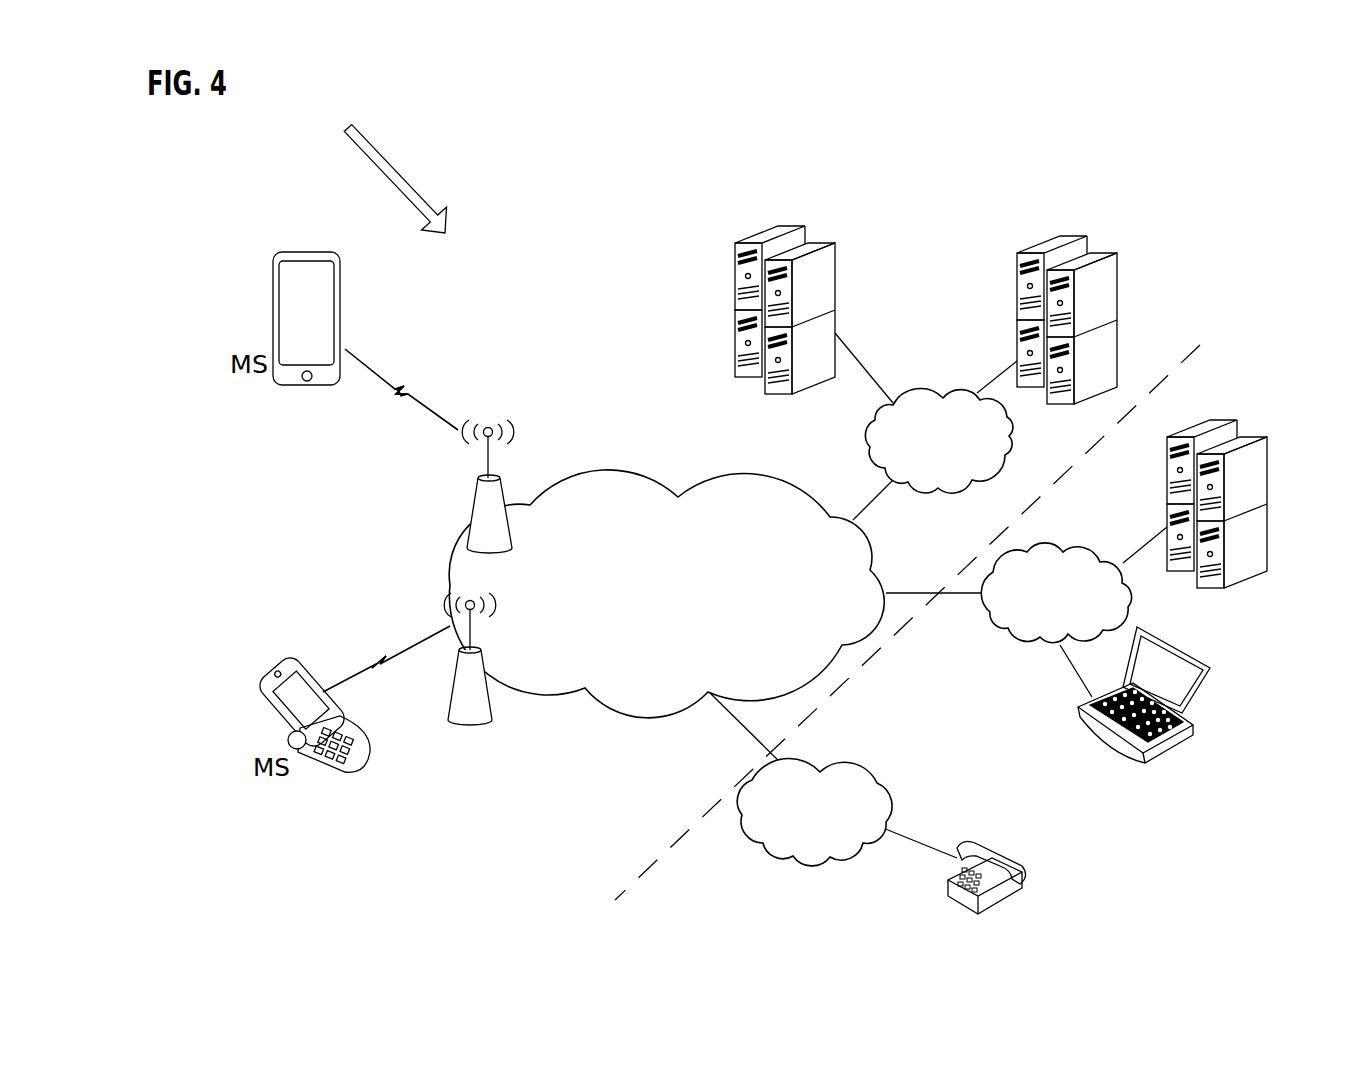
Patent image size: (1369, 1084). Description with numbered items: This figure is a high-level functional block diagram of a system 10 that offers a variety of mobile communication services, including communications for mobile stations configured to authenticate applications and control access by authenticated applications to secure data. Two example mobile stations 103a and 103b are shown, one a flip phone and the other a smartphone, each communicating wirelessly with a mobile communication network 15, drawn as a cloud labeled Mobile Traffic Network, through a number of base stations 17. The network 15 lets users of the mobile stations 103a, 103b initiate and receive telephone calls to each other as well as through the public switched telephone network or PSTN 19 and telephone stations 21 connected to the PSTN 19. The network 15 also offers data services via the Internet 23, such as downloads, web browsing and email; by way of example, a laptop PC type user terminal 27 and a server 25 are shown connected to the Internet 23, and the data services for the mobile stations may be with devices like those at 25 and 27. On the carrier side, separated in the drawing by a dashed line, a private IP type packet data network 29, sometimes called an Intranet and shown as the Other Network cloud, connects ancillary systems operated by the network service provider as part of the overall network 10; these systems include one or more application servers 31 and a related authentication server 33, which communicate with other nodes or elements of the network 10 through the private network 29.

The system 10 is at (388, 170).
The mobile station 103b is at (273, 298).
The mobile station 103a is at (257, 692).
The base station 17 is at (472, 497).
The mobile communication network 15 is at (560, 478).
The application server 31 is at (835, 260).
The authentication server 33 is at (1115, 318).
The private IP type packet data network 29 is at (1010, 447).
The server 25 is at (1167, 505).
The Internet 23 is at (1000, 638).
The laptop PC type user terminal 27 is at (1105, 742).
The public switched telephone network (PSTN) 19 is at (890, 795).
The telephone station 21 is at (945, 898).